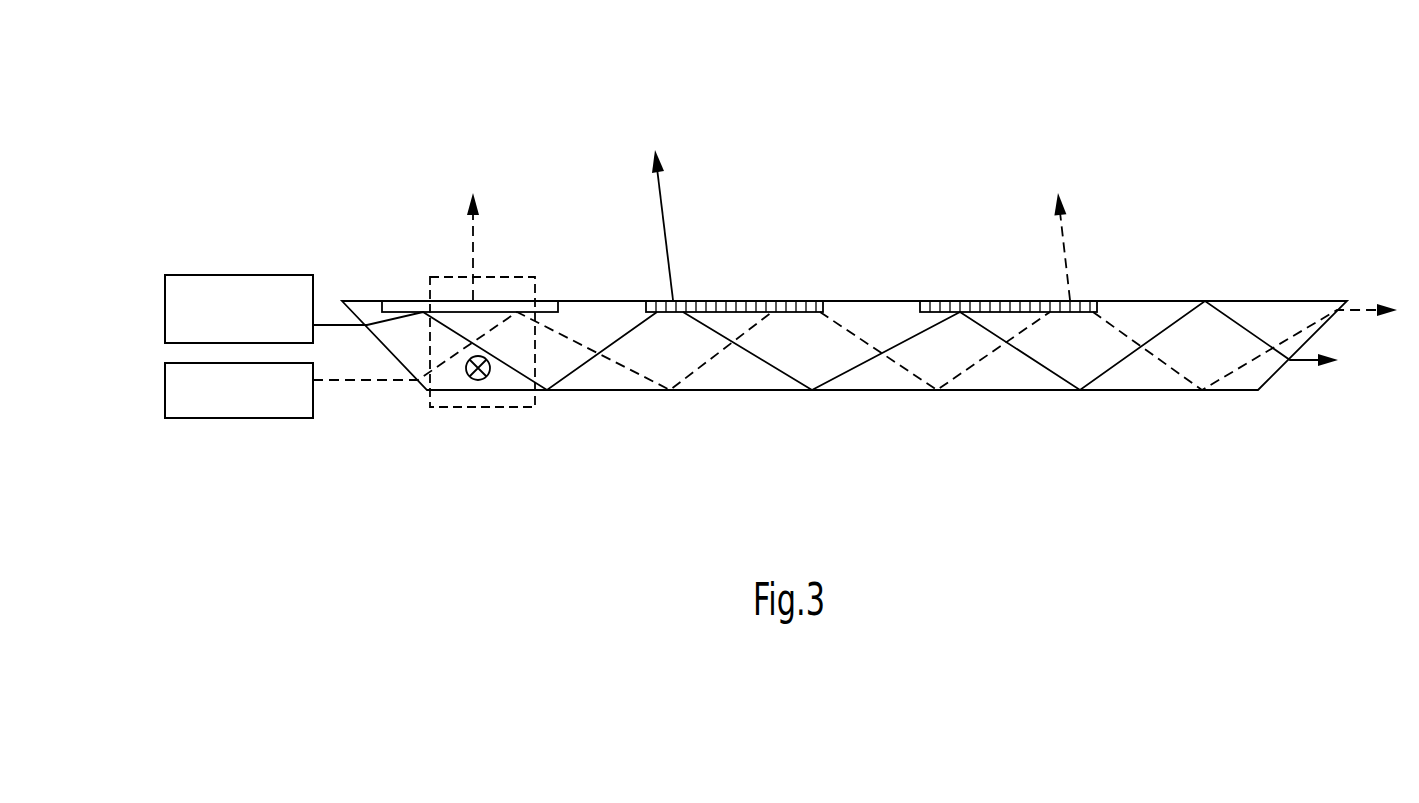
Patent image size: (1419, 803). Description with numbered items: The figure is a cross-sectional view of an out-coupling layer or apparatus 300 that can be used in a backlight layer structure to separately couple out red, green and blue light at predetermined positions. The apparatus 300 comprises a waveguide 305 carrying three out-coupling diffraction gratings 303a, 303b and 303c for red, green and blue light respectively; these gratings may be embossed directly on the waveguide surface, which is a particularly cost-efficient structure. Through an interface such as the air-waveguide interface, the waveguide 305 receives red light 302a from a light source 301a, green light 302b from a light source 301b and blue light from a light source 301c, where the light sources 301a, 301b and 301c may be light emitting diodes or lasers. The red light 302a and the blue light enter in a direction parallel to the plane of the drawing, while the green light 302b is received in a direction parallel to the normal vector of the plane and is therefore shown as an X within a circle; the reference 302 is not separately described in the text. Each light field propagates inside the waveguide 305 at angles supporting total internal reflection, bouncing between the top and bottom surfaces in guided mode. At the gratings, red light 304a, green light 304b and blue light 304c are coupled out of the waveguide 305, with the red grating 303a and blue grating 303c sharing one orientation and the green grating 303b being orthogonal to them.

The out-coupling layer 300 is at (844, 257).
The light source 301a is at (163, 402).
The light source 301b is at (517, 410).
The light source 301c is at (165, 290).
The light beam 302 is at (337, 323).
The red light 302a is at (350, 382).
The green light 302b is at (473, 382).
The out-coupling diffraction grating 303a is at (1092, 299).
The out-coupling diffraction grating 303b is at (550, 299).
The out-coupling diffraction grating 303c is at (817, 300).
The red light 304a is at (1063, 235).
The green light 304b is at (473, 240).
The blue light 304c is at (663, 212).
The waveguide 305 is at (1003, 392).